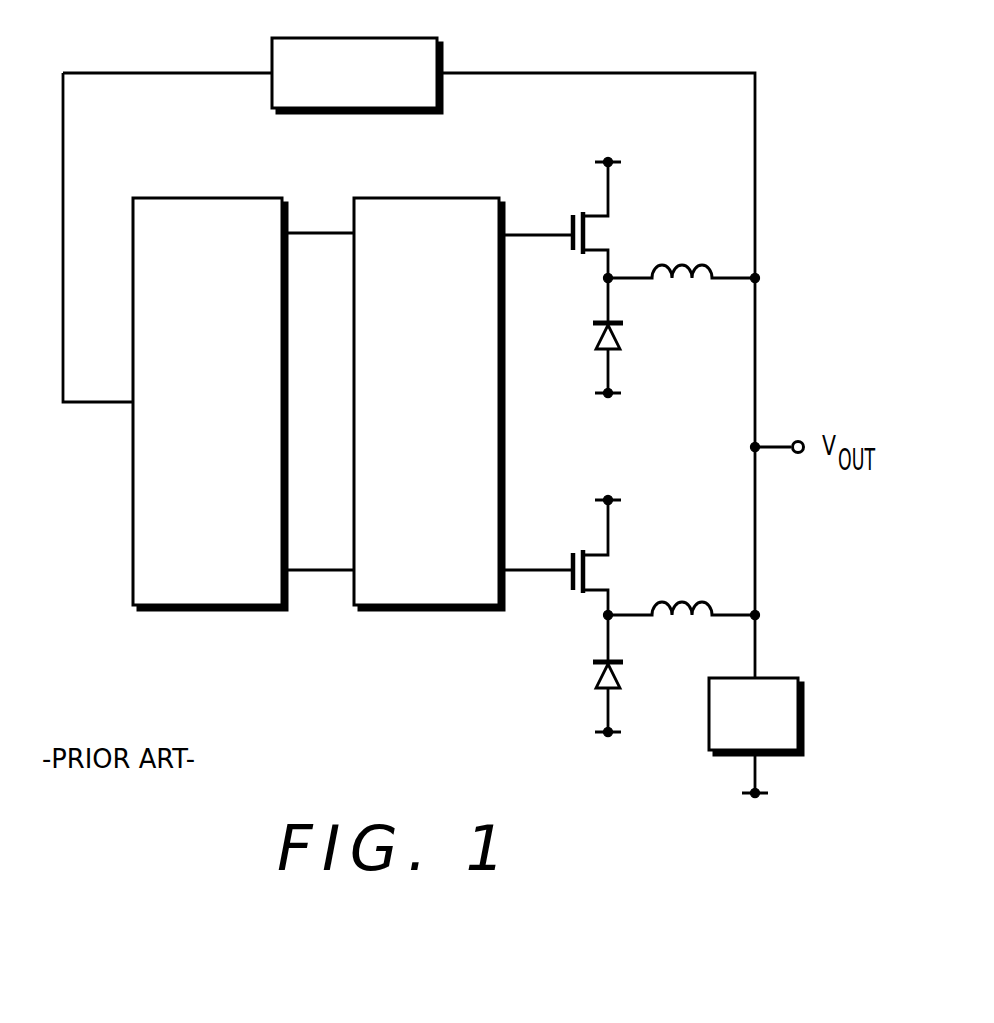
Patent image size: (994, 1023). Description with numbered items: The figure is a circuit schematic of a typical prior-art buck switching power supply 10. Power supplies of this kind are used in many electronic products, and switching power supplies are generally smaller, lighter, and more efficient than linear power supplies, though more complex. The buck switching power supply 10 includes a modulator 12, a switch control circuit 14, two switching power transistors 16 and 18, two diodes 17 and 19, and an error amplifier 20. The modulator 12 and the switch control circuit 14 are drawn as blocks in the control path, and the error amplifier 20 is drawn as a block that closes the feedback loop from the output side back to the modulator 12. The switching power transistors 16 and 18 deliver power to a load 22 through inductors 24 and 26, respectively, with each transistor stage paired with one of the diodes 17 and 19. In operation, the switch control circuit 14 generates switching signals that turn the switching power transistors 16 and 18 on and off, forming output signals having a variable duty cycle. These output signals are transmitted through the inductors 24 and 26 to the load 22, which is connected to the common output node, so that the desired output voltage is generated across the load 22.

The buck switching power supply 10 is at (421, 767).
The modulator 12 is at (178, 612).
The switch control circuit 14 is at (396, 612).
The switching power transistor 16 is at (603, 233).
The diode 17 is at (623, 323).
The switching power transistor 18 is at (603, 570).
The diode 19 is at (623, 662).
The error amplifier 20 is at (303, 38).
The load 22 is at (803, 710).
The inductor 24 is at (692, 262).
The inductor 26 is at (692, 600).